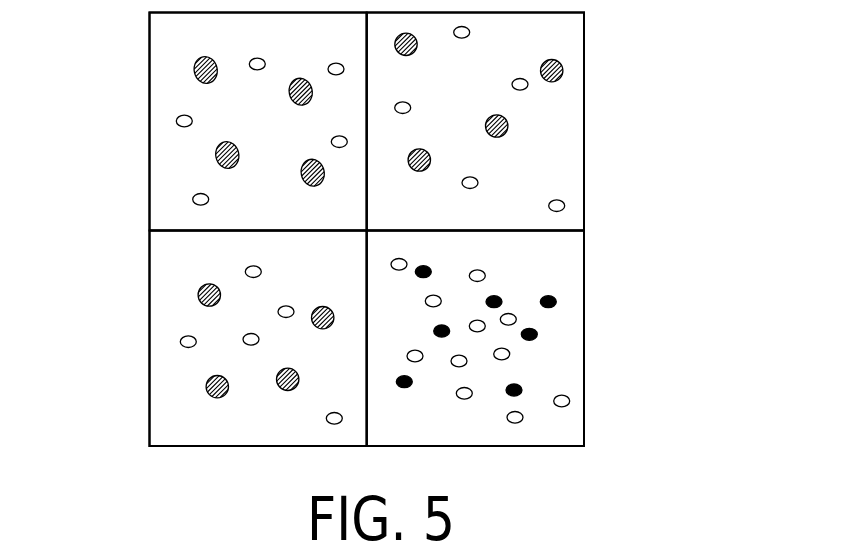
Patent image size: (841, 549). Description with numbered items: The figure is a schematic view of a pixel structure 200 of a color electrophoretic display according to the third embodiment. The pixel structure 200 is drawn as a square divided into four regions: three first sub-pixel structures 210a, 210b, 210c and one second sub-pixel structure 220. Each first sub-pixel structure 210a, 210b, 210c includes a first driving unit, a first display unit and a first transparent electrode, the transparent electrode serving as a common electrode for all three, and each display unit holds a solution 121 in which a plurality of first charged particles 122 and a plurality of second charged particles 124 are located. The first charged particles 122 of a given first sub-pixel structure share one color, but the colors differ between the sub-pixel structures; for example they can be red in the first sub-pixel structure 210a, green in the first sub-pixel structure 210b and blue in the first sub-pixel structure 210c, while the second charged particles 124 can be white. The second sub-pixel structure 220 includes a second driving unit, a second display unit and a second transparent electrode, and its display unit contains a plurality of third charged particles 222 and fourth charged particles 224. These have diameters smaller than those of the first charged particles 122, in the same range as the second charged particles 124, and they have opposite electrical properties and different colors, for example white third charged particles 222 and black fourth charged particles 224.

The pixel structure 200 is at (727, 475).
The first sub-pixel structure 210a is at (156, 36).
The first sub-pixel structure 210b is at (570, 29).
The first sub-pixel structure 210c is at (159, 418).
The second sub-pixel structure 220 is at (572, 421).
The solution 121 is at (165, 182).
The first charged particles 122 is at (195, 70).
The second charged particles 124 is at (177, 121).
The third charged particles 222 is at (508, 353).
The fourth charged particles 224 is at (556, 302).